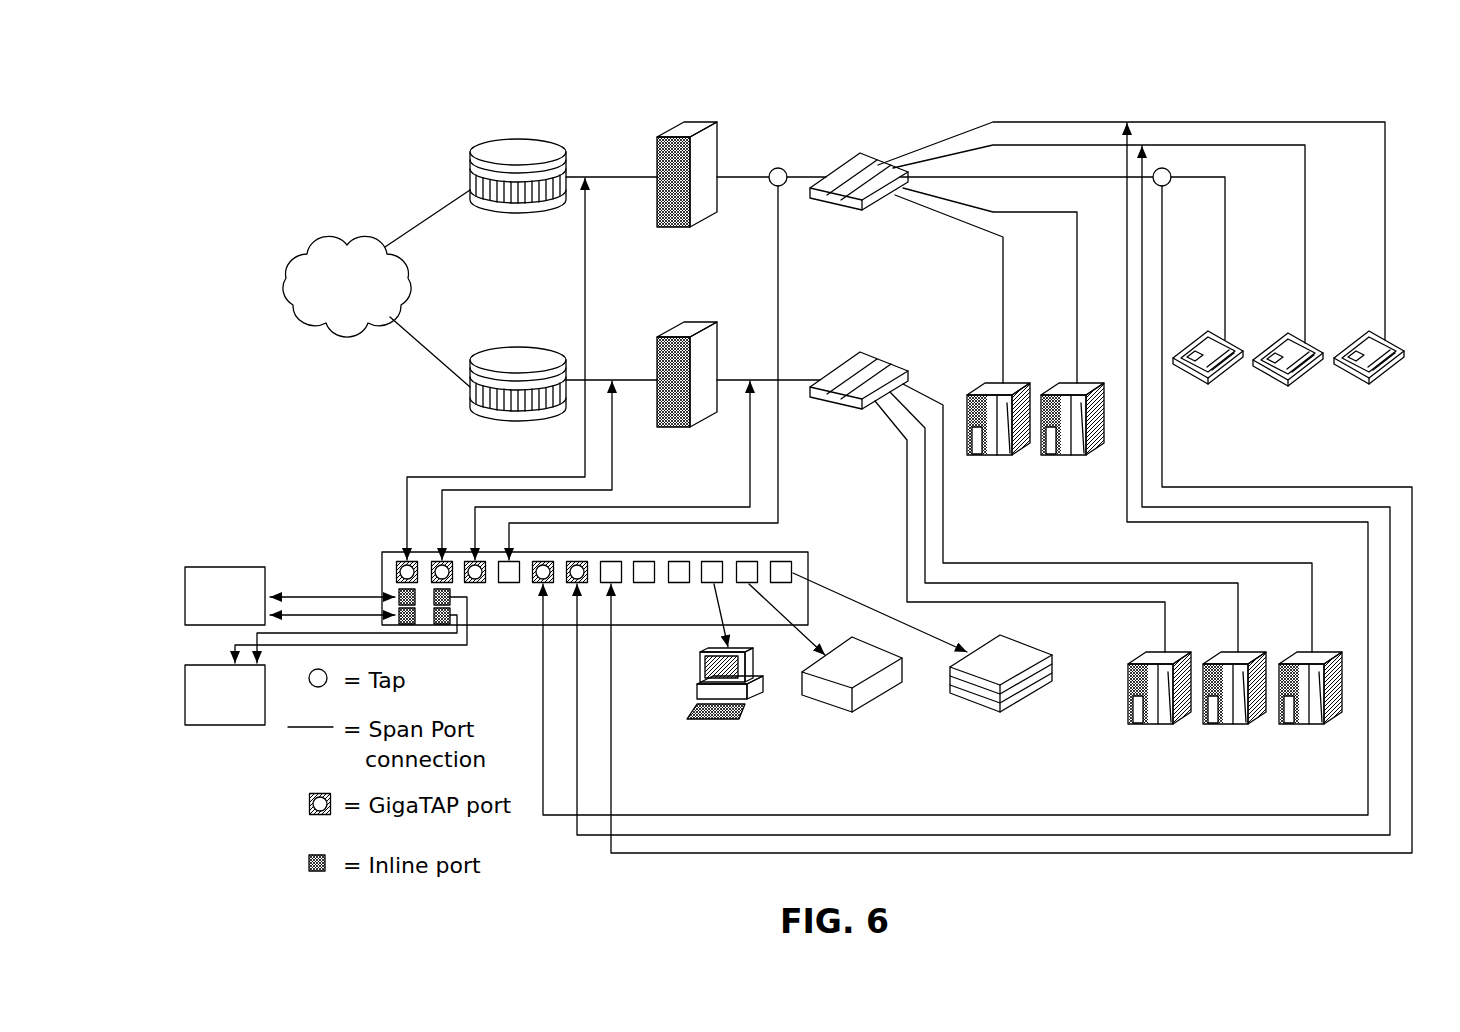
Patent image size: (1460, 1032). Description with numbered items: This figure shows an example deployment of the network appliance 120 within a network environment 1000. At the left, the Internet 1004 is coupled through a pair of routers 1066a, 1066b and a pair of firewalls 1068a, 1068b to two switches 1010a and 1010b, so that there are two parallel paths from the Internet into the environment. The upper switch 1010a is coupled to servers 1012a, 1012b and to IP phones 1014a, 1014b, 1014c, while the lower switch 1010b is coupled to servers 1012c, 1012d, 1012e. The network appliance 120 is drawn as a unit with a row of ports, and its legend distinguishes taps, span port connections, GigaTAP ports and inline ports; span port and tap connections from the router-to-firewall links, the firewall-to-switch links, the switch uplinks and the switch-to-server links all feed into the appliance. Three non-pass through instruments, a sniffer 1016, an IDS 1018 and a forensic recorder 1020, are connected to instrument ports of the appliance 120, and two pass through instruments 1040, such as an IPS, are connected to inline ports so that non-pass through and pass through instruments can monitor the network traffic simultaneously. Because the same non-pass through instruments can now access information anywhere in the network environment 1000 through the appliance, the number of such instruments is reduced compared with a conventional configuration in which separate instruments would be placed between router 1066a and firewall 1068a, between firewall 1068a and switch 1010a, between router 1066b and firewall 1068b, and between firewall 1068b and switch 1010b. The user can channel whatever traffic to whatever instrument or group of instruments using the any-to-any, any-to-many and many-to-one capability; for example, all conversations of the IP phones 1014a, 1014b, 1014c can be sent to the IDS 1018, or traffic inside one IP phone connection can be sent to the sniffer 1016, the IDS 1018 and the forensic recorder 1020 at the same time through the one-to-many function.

The network environment 1000 is at (1242, 52).
The Internet 1004 is at (347, 240).
The router 1066a is at (520, 135).
The router 1066b is at (520, 343).
The firewall 1068a is at (673, 128).
The firewall 1068b is at (673, 330).
The switch 1010a is at (850, 157).
The switch 1010b is at (850, 358).
The server 1012a is at (973, 457).
The server 1012b is at (1100, 455).
The server 1012c is at (1143, 723).
The server 1012d is at (1222, 725).
The server 1012e is at (1338, 718).
The IP phone 1014a is at (1200, 383).
The IP phone 1014b is at (1283, 385).
The IP phone 1014c is at (1365, 383).
The sniffer 1016 is at (710, 665).
The IDS 1018 is at (823, 702).
The forensic recorder 1020 is at (960, 697).
The network appliance 120 is at (380, 585).
The pass through instrument 1040 is at (180, 597).